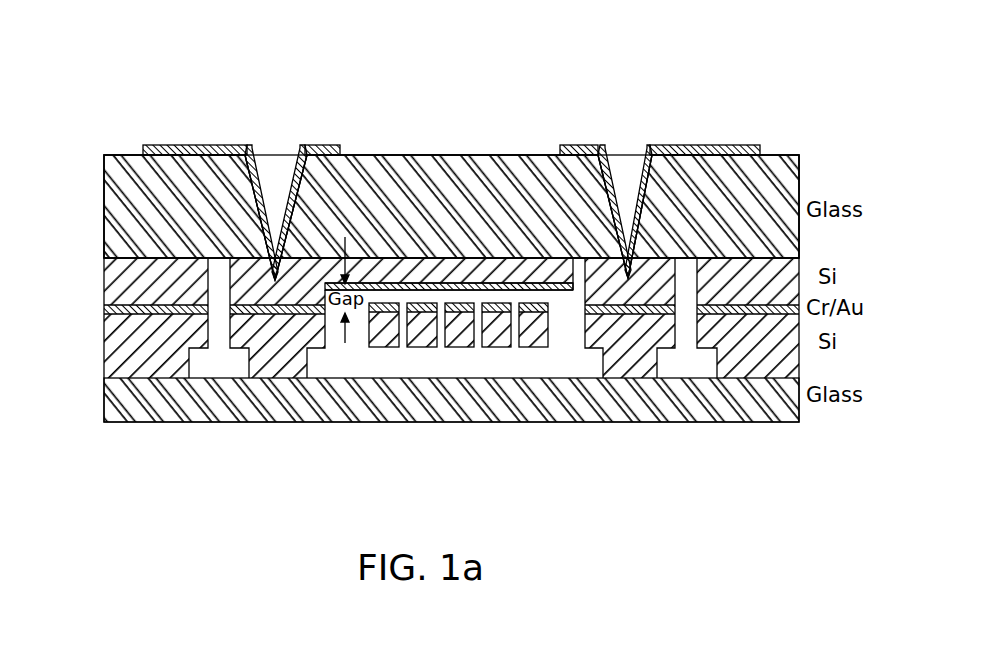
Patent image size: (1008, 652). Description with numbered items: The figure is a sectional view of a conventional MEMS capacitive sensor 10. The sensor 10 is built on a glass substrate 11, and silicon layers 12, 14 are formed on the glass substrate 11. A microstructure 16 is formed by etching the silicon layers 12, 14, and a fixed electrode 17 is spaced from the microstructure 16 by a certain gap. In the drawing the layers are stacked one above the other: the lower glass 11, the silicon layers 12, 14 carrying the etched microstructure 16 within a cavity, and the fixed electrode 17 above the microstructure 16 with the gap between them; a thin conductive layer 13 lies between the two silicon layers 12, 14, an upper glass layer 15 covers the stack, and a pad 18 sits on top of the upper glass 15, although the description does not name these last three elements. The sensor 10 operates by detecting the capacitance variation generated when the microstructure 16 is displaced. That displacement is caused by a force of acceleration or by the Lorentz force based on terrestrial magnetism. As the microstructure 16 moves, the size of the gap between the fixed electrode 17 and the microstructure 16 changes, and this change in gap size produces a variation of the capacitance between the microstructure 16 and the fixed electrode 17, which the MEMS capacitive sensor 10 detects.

The MEMS capacitive sensor 10 is at (790, 109).
The glass substrate 11 is at (115, 410).
The silicon layer 12 is at (117, 353).
The Cr/Au metal layer 13 is at (112, 313).
The silicon layer 14 is at (118, 280).
The upper glass substrate 15 is at (115, 210).
The microstructure 16 is at (461, 341).
The fixed electrode 17 is at (473, 286).
The electrode pad 18 is at (698, 146).